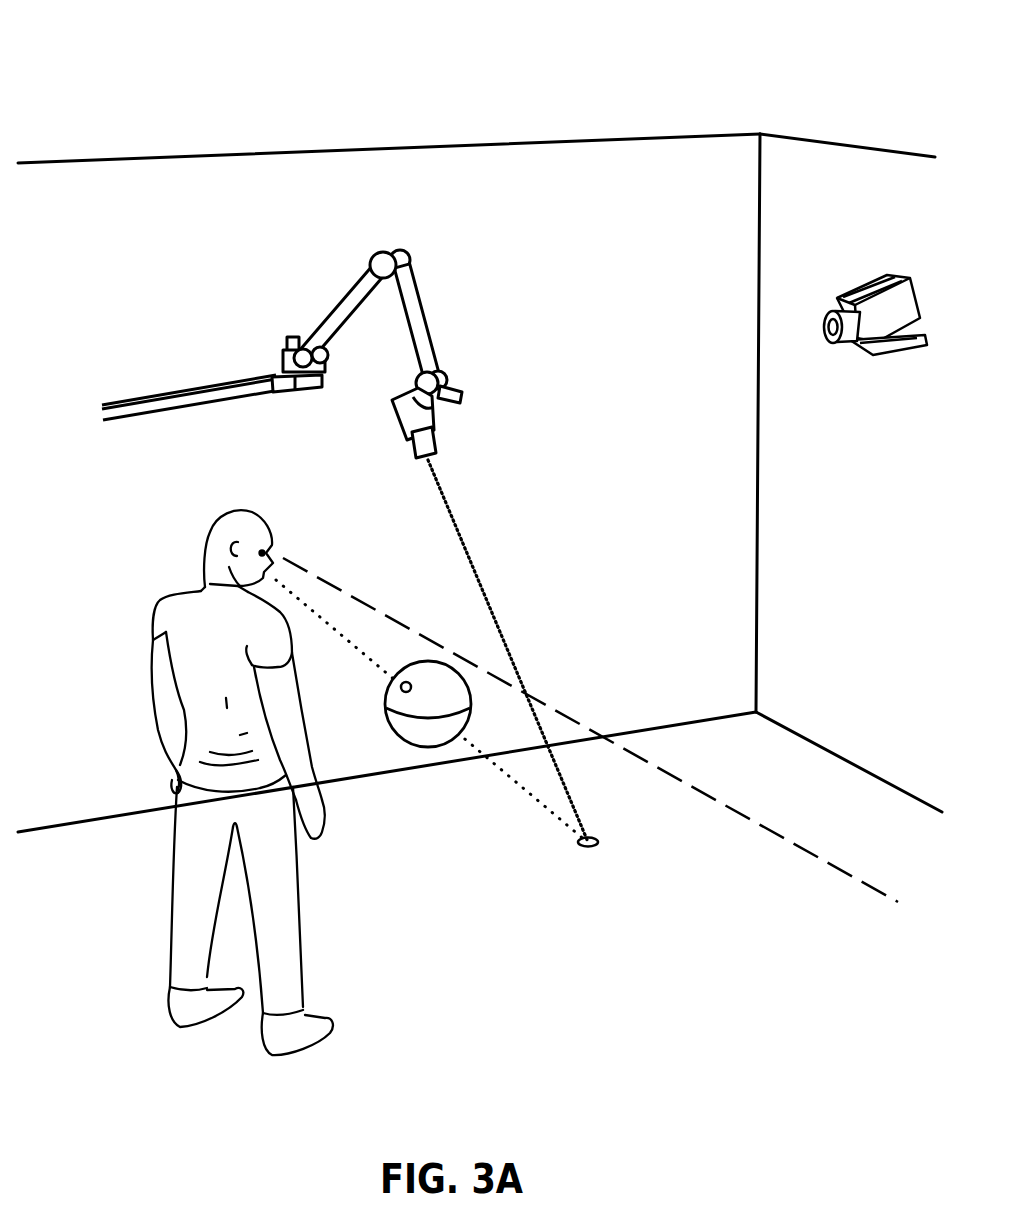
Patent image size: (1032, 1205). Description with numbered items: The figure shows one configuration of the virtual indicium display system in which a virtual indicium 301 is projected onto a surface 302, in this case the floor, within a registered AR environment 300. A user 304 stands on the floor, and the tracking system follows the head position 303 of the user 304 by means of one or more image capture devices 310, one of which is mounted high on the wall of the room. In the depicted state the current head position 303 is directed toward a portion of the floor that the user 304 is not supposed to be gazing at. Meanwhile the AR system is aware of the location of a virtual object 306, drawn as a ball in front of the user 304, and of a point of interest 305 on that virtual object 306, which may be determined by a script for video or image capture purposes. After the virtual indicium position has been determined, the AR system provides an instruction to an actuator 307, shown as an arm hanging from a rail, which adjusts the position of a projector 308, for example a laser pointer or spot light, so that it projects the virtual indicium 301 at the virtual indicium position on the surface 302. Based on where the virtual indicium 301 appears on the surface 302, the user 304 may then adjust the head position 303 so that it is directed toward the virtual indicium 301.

The registered AR environment 300 is at (189, 117).
The virtual indicium 301 is at (597, 838).
The surface 302 is at (656, 946).
The head position 303 is at (233, 523).
The user 304 is at (326, 743).
The point of interest 305 is at (401, 687).
The virtual object 306 is at (389, 772).
The actuator 307 is at (465, 380).
The projector 308 is at (442, 437).
The image capture device 310 is at (859, 281).